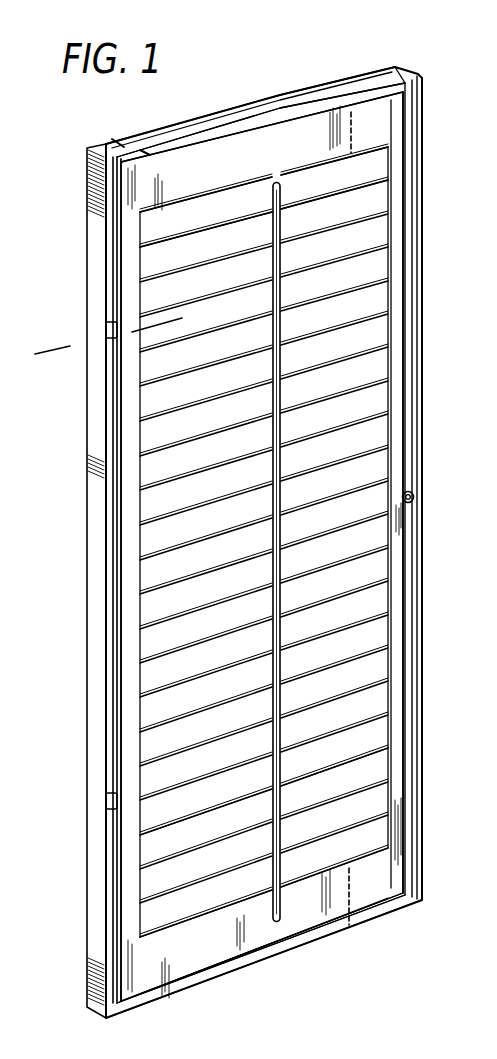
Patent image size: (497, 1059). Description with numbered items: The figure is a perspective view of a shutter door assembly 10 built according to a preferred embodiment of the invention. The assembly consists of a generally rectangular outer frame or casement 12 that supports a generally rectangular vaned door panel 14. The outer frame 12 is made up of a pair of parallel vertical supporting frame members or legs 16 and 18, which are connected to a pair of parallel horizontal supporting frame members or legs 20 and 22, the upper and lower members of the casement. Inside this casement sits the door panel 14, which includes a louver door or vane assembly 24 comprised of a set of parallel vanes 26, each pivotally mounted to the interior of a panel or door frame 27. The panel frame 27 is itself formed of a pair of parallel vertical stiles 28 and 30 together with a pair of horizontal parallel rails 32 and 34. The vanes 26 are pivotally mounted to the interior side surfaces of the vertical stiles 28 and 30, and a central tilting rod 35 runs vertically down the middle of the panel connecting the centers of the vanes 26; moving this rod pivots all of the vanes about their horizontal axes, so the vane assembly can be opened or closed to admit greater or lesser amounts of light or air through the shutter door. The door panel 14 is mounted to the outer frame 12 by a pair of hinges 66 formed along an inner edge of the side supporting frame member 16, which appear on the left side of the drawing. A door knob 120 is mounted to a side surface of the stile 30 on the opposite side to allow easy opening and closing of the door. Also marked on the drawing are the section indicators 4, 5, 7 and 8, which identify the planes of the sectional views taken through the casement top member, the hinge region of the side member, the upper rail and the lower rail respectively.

The shutter door assembly 10 is at (258, 86).
The outer frame 12 is at (97, 492).
The door panel 14 is at (398, 654).
The vertical supporting frame member 16 is at (97, 603).
The vertical supporting frame member 18 is at (418, 532).
The horizontal supporting frame member 20 is at (187, 128).
The horizontal supporting frame member 22 is at (243, 965).
The vane assembly 24 is at (363, 303).
The vanes 26 is at (381, 176).
The panel frame 27 is at (436, 492).
The vertical stile 28 is at (120, 870).
The vertical stile 30 is at (400, 597).
The horizontal rail 32 is at (368, 112).
The horizontal rail 34 is at (175, 965).
The central tilting rod 35 is at (285, 390).
The hinges 66 is at (118, 328).
The door knob 120 is at (420, 493).
The section line 4- 4 is at (68, 123).
The section line 5- 5 is at (168, 313).
The section line 7- 7 is at (348, 146).
The section line 8- 8 is at (348, 907).